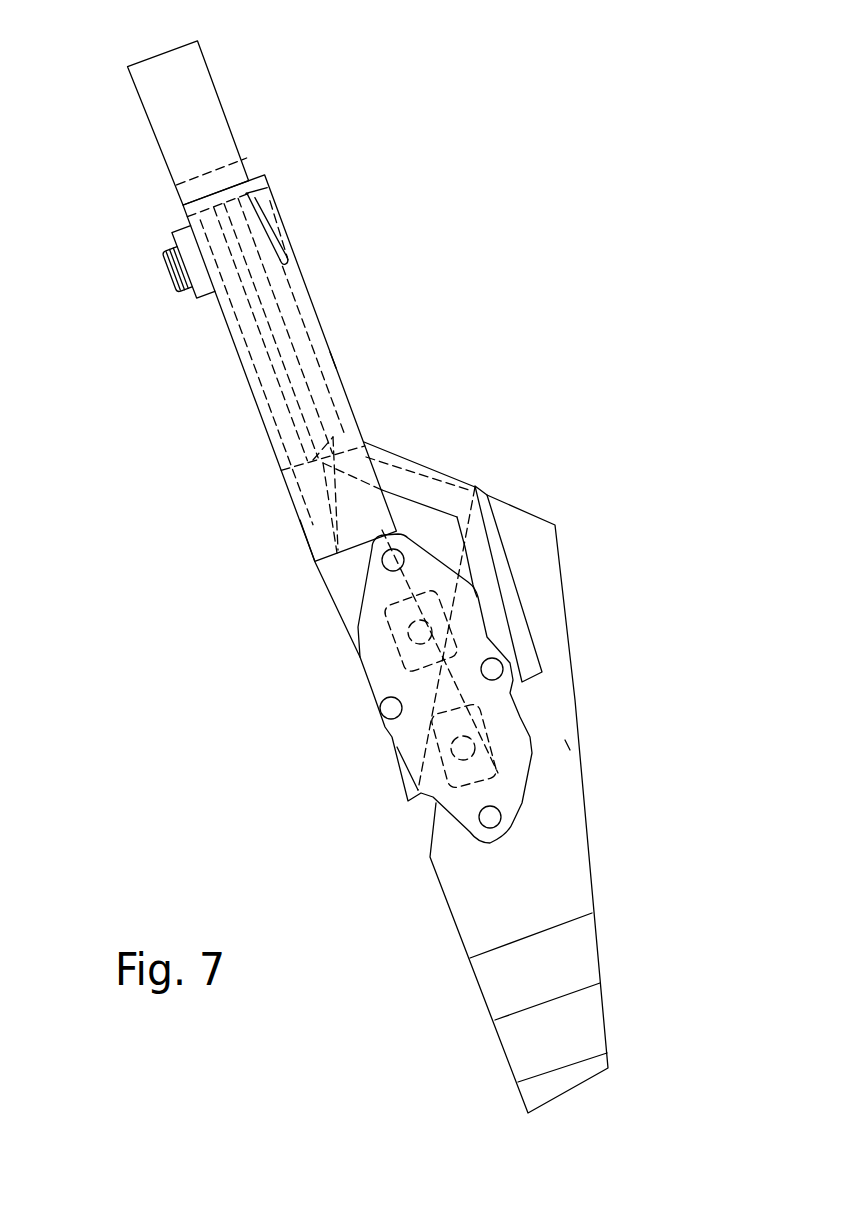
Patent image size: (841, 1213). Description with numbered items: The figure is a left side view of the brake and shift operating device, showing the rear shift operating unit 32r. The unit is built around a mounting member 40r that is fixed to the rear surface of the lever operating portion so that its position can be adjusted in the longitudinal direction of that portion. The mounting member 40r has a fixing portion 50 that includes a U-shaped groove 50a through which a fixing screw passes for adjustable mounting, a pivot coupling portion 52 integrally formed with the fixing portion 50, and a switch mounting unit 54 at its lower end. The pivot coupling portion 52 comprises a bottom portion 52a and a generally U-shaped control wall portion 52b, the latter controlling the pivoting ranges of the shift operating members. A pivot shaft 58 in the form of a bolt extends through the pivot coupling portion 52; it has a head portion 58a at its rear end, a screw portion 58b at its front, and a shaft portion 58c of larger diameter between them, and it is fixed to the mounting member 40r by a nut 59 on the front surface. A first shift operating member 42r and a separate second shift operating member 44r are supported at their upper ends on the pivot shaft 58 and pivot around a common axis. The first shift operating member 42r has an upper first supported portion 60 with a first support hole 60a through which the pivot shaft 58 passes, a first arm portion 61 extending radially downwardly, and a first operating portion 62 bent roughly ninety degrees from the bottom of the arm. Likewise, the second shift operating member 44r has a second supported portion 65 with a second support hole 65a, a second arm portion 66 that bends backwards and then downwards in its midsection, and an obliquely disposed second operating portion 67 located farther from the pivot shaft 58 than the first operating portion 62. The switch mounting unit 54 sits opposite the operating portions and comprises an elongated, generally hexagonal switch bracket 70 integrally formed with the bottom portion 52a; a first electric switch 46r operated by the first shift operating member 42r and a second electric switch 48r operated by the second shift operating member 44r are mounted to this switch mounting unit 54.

The rear shift operating unit 32r is at (313, 177).
The mounting member 40r is at (260, 90).
The first shift operating member 42r is at (448, 478).
The second shift operating member 44r is at (583, 813).
The first electric switch 46r is at (440, 605).
The second electric switch 48r is at (490, 728).
The fixing portion 50 is at (217, 72).
The U-shaped groove 50a is at (190, 181).
The pivot coupling portion 52 is at (333, 325).
The bottom portion 52a is at (271, 428).
The control wall portion 52b is at (336, 362).
The switch mounting unit 54 is at (353, 655).
The pivot shaft 58 is at (247, 303).
The head portion 58a is at (282, 228).
The screw portion 58b is at (163, 253).
The shaft portion 58c is at (237, 347).
The nut 59 is at (218, 297).
The first supported portion 60 is at (212, 307).
The first support hole 60a is at (172, 233).
The first arm portion 61 is at (293, 497).
The first operating portion 62 is at (460, 482).
The second supported portion 65 is at (235, 190).
The second support hole 65a is at (282, 268).
The second arm portion 66 is at (322, 398).
The second operating portion 67 is at (567, 747).
The switch bracket 70 is at (413, 757).